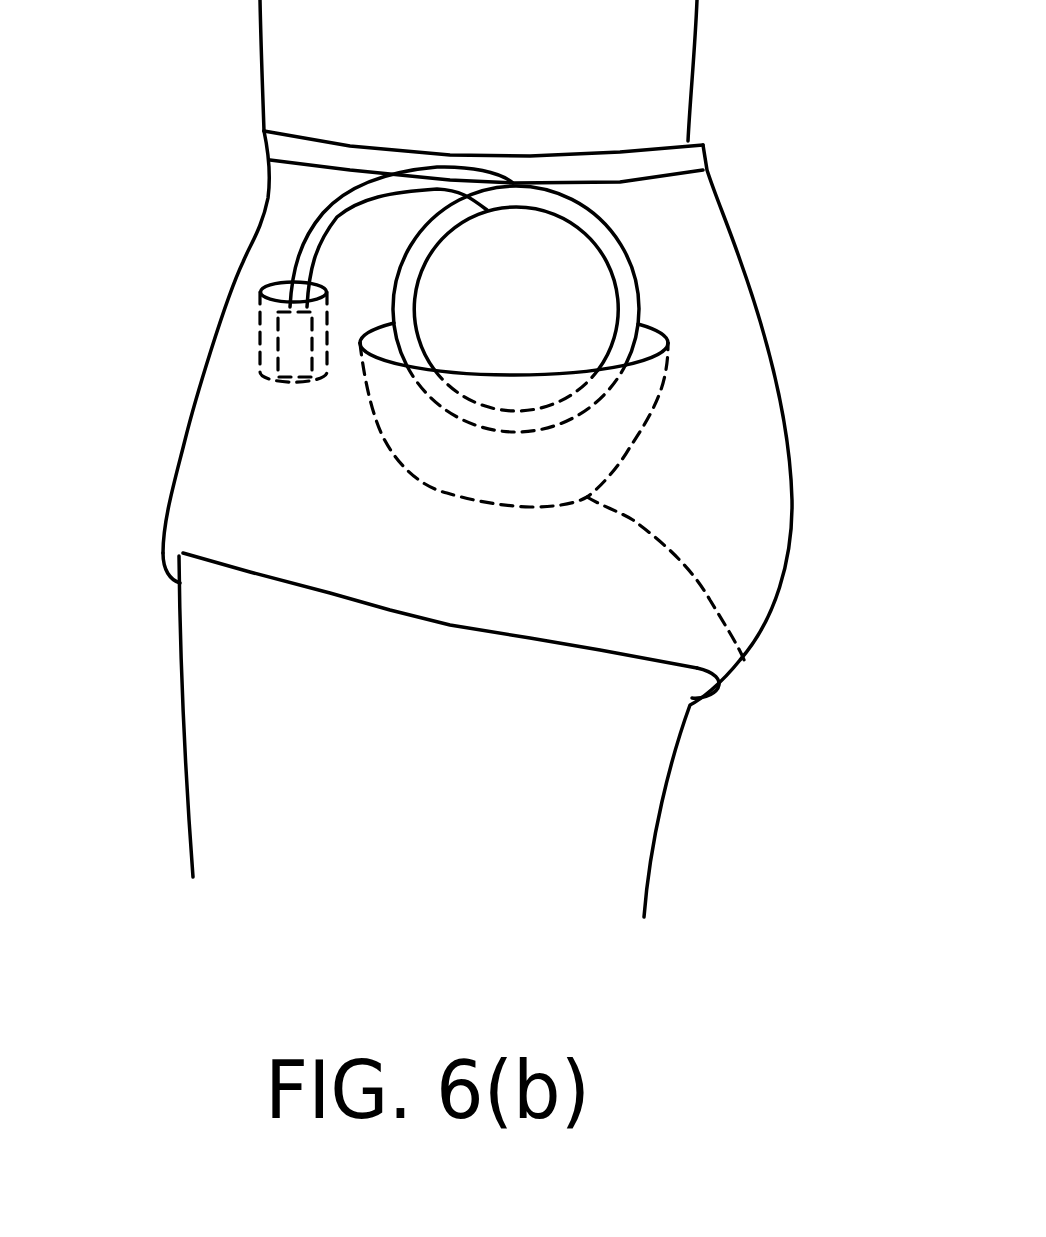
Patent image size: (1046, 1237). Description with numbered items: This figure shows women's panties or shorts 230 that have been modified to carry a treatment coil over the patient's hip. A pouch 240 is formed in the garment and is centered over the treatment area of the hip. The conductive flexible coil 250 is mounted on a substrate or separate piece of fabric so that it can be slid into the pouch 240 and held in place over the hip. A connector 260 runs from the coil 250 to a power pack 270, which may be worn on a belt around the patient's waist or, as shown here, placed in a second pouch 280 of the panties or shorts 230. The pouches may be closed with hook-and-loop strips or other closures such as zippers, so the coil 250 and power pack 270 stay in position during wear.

The panties or shorts 230 is at (743, 568).
The pouch 240 is at (745, 662).
The conductive flexible coil 250 is at (625, 243).
The connector 260 is at (300, 252).
The power pack 270 is at (290, 372).
The pouch 280 is at (262, 323).